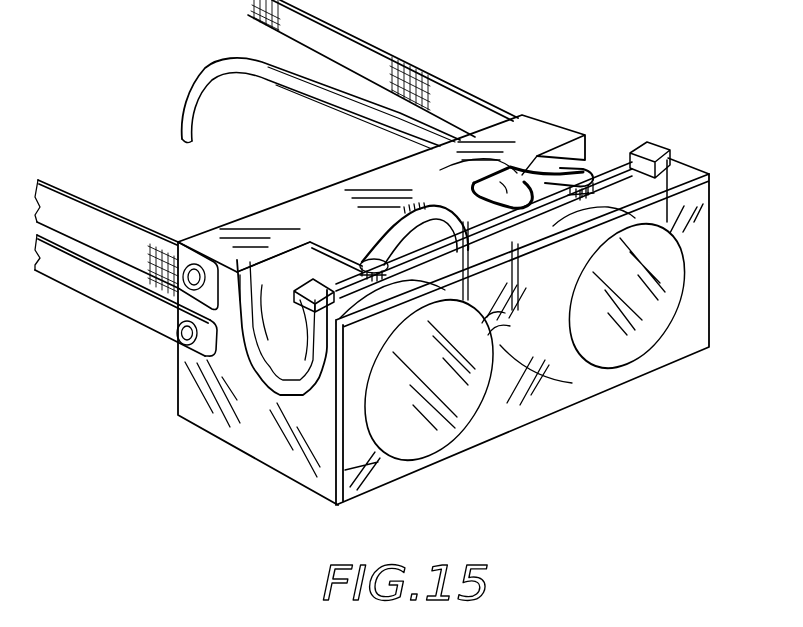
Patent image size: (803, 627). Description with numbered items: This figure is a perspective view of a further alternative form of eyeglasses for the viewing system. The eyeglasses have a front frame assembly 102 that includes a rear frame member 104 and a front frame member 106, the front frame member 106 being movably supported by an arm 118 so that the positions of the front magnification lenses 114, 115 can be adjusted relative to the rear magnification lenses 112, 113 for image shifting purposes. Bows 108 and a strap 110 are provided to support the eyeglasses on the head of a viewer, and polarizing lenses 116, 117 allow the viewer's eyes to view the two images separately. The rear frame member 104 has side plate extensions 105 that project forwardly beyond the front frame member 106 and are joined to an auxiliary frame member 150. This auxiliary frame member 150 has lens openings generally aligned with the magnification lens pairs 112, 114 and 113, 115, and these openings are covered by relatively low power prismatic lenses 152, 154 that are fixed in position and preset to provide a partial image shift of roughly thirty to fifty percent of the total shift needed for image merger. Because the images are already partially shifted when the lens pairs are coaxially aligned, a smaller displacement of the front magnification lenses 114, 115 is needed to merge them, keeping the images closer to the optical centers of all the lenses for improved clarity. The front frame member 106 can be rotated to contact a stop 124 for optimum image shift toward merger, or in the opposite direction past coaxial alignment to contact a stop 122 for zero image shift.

The front frame assembly 102 is at (266, 491).
The rear frame member 104 is at (253, 218).
The side plate extensions 105 is at (230, 437).
The front frame member 106 is at (660, 167).
The bows 108 is at (92, 291).
The strap 110 is at (100, 223).
The rear magnification lens 112 is at (263, 290).
The rear magnification lens 113 is at (519, 182).
The front magnification lens 114 is at (385, 287).
The front magnification lens 115 is at (568, 212).
The polarizing lens 116 is at (265, 348).
The polarizing lens 117 is at (556, 205).
The arm 118 is at (441, 208).
The stop 122 is at (370, 257).
The stop 124 is at (583, 163).
The auxiliary frame member 150 is at (520, 423).
The prismatic lens 152 is at (430, 443).
The prismatic lens 154 is at (637, 353).